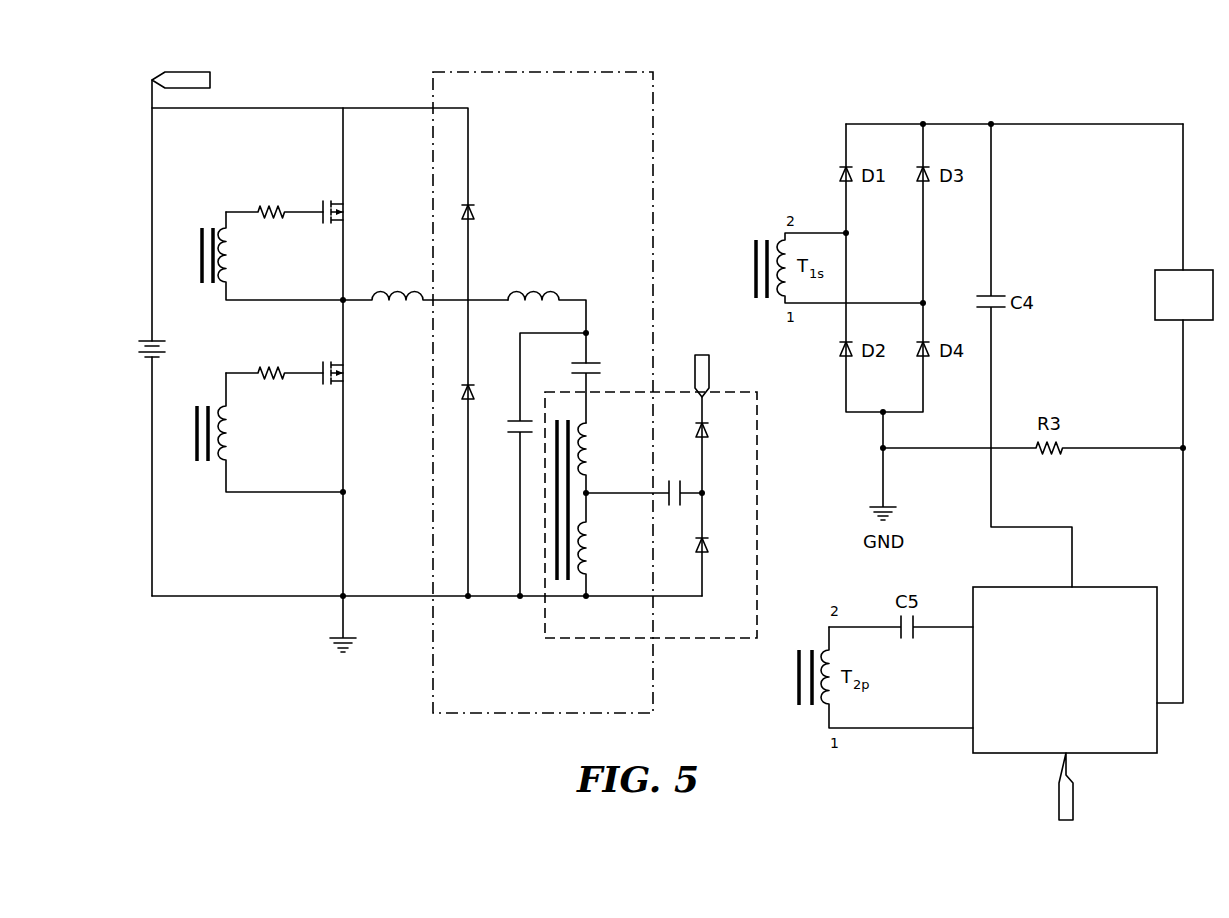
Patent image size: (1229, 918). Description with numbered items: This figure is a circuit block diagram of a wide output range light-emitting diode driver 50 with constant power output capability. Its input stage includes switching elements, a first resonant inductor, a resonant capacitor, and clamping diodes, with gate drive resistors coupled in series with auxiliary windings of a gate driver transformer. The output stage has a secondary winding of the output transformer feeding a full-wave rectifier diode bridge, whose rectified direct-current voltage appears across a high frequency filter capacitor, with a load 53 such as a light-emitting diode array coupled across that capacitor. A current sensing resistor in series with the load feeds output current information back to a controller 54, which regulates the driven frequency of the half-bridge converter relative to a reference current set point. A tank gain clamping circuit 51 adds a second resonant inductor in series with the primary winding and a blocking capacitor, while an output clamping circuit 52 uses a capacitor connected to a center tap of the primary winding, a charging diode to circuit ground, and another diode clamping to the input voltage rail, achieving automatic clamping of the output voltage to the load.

The LED driver 50 is at (318, 66).
The tank gain clamping circuit 51 is at (598, 70).
The output clamping circuit 52 is at (690, 638).
The load 53 is at (1160, 270).
The controller 54 is at (1130, 753).